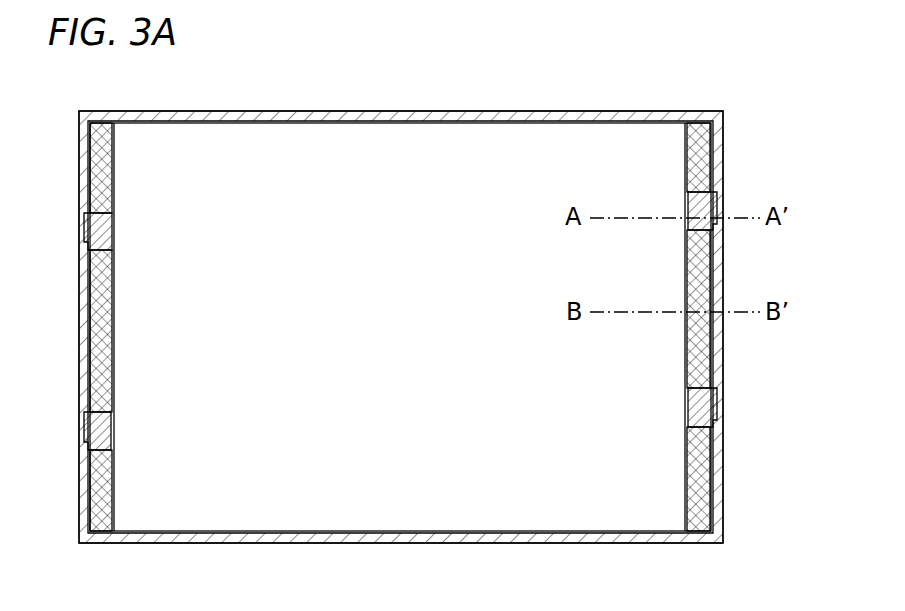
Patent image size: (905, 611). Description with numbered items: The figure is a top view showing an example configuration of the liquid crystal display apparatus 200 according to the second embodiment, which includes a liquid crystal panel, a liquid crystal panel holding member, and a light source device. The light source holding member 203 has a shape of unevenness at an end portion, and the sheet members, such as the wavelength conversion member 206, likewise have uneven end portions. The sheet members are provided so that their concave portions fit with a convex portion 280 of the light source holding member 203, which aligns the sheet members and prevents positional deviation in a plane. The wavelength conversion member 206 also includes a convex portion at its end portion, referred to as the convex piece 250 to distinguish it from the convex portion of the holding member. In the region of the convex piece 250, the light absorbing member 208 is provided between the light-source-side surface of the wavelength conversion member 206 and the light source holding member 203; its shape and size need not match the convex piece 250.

The liquid crystal display apparatus 200 is at (79, 545).
The light source holding member 203 is at (92, 423).
The wavelength conversion member 206 is at (215, 521).
The light absorbing member 208 is at (104, 188).
The convex piece 250 is at (102, 128).
The convex portion 280 is at (702, 208).